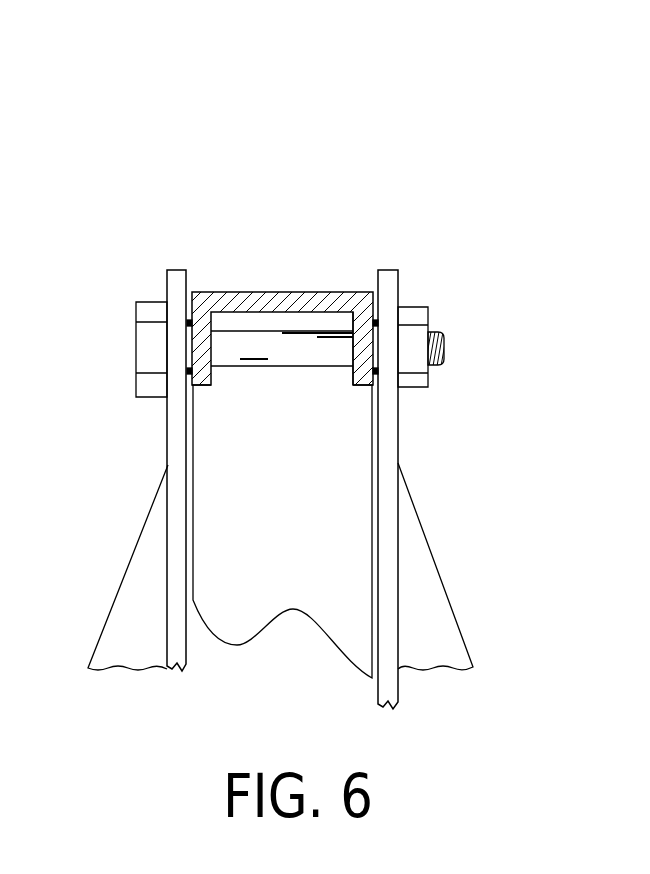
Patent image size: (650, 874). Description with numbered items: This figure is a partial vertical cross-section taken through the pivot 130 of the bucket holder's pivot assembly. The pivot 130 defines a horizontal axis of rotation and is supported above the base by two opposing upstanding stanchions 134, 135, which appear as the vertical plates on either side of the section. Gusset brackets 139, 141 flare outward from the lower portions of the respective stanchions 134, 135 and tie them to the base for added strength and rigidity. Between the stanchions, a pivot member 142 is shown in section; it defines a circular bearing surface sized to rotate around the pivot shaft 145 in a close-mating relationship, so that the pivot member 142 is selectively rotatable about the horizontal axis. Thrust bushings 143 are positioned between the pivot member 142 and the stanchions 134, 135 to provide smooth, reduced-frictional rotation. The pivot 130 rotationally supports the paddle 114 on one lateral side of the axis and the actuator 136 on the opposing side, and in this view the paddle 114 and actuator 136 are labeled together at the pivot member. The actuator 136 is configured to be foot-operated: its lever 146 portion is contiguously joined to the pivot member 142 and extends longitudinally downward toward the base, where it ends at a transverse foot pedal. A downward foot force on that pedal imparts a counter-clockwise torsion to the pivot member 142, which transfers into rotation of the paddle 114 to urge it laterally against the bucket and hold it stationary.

The pivot 130 is at (267, 206).
The stanchion 134 is at (175, 277).
The stanchion 135 is at (391, 277).
The paddle 114 is at (280, 293).
The actuator 136 is at (284, 308).
The pivot shaft 145 is at (250, 343).
The thrust bushings 143 is at (365, 383).
The pivot member 142 is at (363, 350).
The lever 146 is at (310, 492).
The gusset bracket 139 is at (140, 573).
The gusset bracket 141 is at (425, 592).